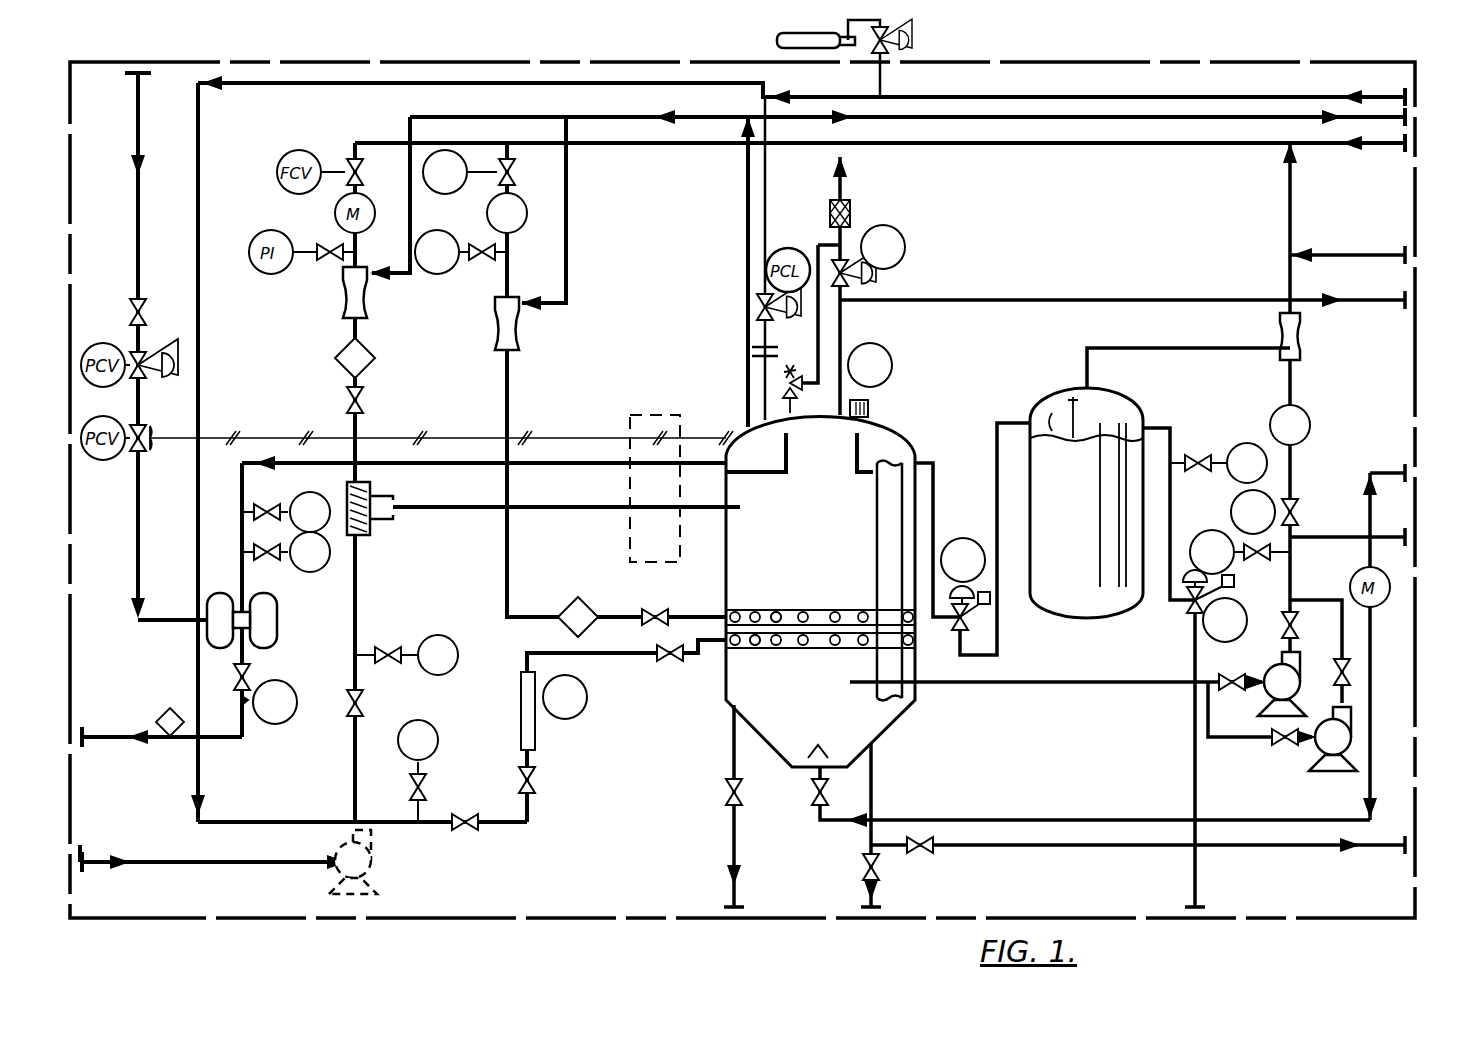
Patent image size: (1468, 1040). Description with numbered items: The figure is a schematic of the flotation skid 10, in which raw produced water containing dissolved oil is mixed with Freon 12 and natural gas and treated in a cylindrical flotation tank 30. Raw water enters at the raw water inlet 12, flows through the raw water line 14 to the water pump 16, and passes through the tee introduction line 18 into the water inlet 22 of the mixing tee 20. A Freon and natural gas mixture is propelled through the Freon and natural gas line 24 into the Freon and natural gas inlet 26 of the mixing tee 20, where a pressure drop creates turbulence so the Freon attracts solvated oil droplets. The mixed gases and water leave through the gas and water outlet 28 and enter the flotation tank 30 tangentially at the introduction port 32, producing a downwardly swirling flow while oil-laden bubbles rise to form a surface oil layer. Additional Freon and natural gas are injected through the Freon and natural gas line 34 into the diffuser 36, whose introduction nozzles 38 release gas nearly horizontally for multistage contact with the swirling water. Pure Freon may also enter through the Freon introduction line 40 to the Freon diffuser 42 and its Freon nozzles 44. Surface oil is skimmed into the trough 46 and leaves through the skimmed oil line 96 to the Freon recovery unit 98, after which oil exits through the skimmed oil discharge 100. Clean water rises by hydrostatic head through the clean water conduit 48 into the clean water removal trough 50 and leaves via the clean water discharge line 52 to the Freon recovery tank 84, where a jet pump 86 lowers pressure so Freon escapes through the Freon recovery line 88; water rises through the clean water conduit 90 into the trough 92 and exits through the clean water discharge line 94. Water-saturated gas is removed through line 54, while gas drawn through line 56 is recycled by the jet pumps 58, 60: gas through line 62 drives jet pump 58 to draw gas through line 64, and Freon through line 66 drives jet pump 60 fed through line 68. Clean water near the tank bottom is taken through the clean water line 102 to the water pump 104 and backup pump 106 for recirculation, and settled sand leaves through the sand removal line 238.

The flotation skid 10 is at (1418, 478).
The raw water inlet 12 is at (80, 845).
The raw water line 14 is at (205, 865).
The water pump 16 is at (380, 858).
The tee introduction line 18 is at (362, 603).
The mixing tee 20 is at (385, 490).
The water inlet 22 is at (365, 540).
The Freon and natural gas line 24 is at (368, 330).
The Freon and natural gas inlet 26 is at (355, 478).
The gas and water outlet 28 is at (400, 503).
The flotation tank 30 is at (848, 555).
The introduction port 32 is at (735, 510).
The Freon and natural gas line 34 is at (540, 612).
The diffuser 36 is at (830, 608).
The introduction nozzles 38 is at (740, 610).
The Freon introduction line 40 is at (598, 665).
The Freon diffuser 42 is at (800, 650).
The Freon nozzles 44 is at (755, 652).
The trough 46 is at (790, 448).
The clean water conduit 48 is at (880, 540).
The clean water removal trough 50 is at (855, 460).
The clean water discharge line 52 is at (930, 455).
The line 54 is at (858, 328).
The line 56 is at (745, 340).
The jet pump 58 is at (342, 295).
The jet pump 60 is at (500, 325).
The line 62 is at (352, 236).
The line 64 is at (410, 278).
The line 66 is at (512, 272).
The line 68 is at (572, 300).
The Freon recovery tank 84 is at (1117, 496).
The jet pump 86 is at (1300, 350).
The Freon recovery line 88 is at (1135, 345).
The clean water conduit 90 is at (1098, 525).
The trough 92 is at (1078, 418).
The clean water discharge line 94 is at (1175, 440).
The skimmed oil line 96 is at (705, 470).
The Freon recovery unit 98 is at (665, 410).
The skimmed oil discharge 100 is at (158, 745).
The clean water line 102 is at (975, 685).
The water pump 104 is at (1270, 710).
The backup pump 106 is at (1340, 765).
The sand removal line 238 is at (875, 785).